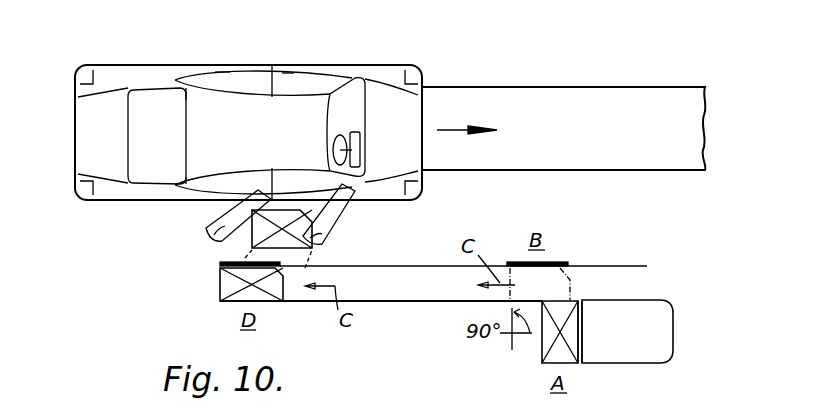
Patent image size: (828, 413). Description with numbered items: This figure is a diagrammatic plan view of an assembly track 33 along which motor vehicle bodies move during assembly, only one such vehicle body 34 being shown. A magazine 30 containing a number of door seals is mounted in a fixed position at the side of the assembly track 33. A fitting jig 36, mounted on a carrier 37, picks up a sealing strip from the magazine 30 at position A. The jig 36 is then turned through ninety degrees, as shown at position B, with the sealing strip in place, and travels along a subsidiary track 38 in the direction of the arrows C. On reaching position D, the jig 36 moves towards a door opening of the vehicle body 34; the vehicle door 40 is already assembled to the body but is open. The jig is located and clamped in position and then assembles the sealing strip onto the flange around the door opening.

The magazine 30 is at (675, 340).
The assembly track 33 is at (530, 97).
The motor vehicle body 34 is at (371, 66).
The fitting jig 36 is at (583, 298).
The carrier 37 is at (218, 292).
The subsidiary track 38 is at (385, 287).
The vehicle door 40 is at (340, 216).